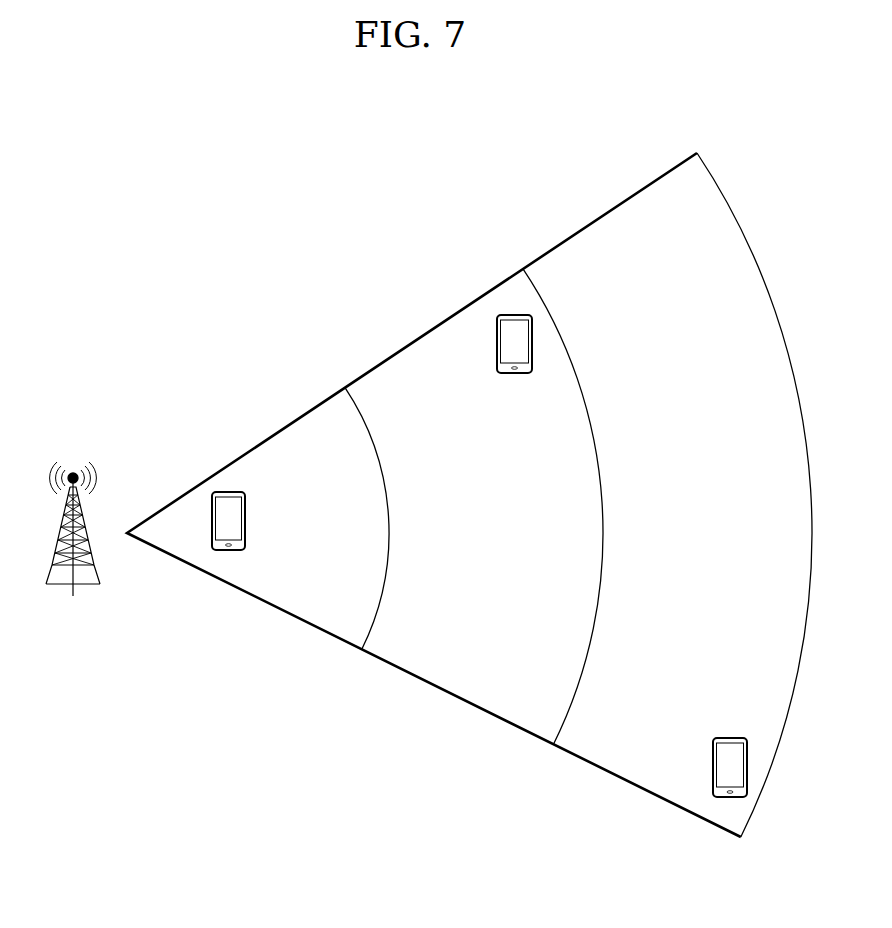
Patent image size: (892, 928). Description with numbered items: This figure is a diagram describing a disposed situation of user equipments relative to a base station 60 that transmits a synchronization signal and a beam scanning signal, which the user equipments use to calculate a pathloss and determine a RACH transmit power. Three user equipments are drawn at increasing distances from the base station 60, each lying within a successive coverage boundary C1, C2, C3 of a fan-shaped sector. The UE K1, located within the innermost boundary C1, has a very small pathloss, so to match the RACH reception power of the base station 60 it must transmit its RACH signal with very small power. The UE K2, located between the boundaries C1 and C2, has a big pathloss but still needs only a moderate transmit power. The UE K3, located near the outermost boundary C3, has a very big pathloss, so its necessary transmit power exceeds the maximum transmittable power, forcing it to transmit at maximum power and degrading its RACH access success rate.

The base station 60 is at (83, 529).
The UE K1 is at (228, 521).
The UE K2 is at (514, 344).
The UE K3 is at (730, 767).
The first coverage boundary C1 is at (360, 537).
The second coverage boundary C2 is at (563, 525).
The third coverage boundary C3 is at (754, 514).